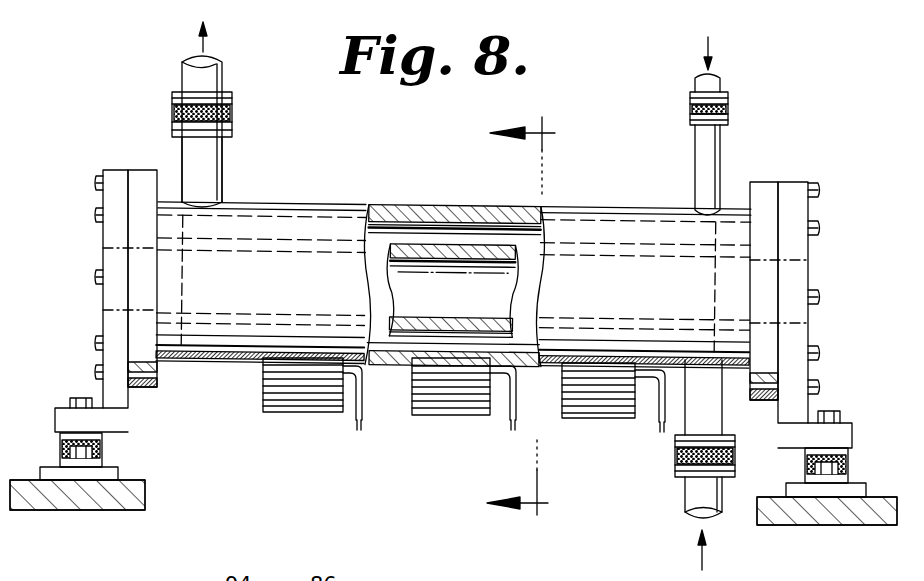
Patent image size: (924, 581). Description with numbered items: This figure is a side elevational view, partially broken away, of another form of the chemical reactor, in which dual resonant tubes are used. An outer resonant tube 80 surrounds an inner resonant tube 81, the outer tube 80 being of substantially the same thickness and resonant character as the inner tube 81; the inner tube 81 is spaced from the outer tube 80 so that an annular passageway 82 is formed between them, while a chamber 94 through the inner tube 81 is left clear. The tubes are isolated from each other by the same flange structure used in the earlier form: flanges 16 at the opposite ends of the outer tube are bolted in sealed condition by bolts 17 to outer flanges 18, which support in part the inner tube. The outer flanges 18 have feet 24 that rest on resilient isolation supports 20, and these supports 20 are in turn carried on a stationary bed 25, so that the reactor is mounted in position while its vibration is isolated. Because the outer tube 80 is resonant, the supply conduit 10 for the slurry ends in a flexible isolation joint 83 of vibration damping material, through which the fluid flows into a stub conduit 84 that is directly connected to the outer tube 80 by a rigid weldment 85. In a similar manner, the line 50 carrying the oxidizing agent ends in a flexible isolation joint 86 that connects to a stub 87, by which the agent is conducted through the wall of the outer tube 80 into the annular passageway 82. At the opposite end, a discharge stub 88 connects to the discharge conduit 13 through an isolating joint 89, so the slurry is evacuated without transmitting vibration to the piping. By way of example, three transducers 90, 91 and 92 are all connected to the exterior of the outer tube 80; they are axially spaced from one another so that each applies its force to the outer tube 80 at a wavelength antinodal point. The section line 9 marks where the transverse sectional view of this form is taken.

The section line 9- 9 is at (523, 332).
The outlet pipe 10 is at (192, 72).
The inlet pipe 13 is at (697, 505).
The end flange 16 is at (146, 282).
The flange bolts 17 is at (95, 215).
The flange cover plate 18 is at (113, 260).
The resilient mounting block 20 is at (102, 447).
The support bracket 24 is at (62, 420).
The foundation 25 is at (82, 488).
The inlet pipe 50 is at (712, 82).
The outer shell wall section 80 is at (433, 202).
The inner tube wall 81 is at (500, 215).
The break line of cutaway 82 is at (388, 205).
The pipe flange coupling 83 is at (230, 110).
The pipe stub 84 is at (190, 152).
The weld joint 85 is at (222, 200).
The pipe flange coupling 86 is at (690, 105).
The pipe stub 87 is at (705, 155).
The pipe stub 88 is at (700, 372).
The pipe flange coupling 89 is at (680, 450).
The finned heat exchanger element 90 is at (308, 410).
The finned heat exchanger element 91 is at (445, 402).
The finned heat exchanger element 92 is at (585, 405).
The inner tube bore 94 is at (500, 272).